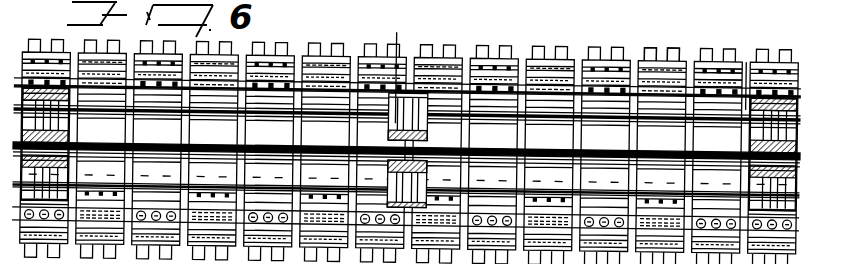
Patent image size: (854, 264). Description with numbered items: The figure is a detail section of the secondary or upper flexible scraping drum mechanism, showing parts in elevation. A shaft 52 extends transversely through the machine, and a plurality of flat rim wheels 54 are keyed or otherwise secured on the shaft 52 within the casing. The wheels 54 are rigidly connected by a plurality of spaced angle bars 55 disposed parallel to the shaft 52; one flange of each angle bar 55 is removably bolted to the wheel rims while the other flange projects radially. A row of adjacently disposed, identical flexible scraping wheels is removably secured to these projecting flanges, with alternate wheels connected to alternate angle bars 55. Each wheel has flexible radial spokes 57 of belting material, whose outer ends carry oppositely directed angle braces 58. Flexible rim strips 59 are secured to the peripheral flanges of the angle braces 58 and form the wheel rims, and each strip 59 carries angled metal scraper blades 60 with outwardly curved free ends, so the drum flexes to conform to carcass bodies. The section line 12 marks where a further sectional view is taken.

The section line 12- 12 is at (398, 28).
The shaft 52 is at (572, 140).
The flat rim wheels 54 is at (55, 125).
The angle bars 55 is at (314, 186).
The flexible radial arms or spokes 57 is at (713, 72).
The angle braces 58 is at (744, 55).
The flexible rim strips 59 is at (695, 59).
The metal scraper blades 60 is at (673, 50).